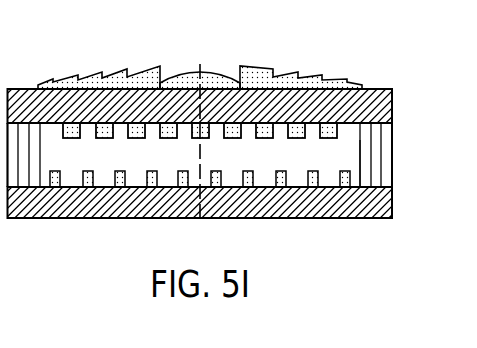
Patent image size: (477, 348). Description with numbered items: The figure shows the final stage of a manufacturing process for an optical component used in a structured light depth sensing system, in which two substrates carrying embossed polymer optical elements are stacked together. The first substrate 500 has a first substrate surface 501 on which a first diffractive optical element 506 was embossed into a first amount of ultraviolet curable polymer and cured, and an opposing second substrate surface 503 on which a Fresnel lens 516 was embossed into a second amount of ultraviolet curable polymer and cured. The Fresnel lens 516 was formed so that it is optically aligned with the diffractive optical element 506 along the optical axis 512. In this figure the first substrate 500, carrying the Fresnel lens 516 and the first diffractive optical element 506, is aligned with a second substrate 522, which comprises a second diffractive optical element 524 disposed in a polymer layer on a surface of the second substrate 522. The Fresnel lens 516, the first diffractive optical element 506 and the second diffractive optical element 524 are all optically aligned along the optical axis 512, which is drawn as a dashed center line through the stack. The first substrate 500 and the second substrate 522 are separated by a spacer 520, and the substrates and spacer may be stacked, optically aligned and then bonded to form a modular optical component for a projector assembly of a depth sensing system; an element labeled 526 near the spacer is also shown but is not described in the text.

The substrate 500 is at (378, 89).
The first substrate surface 501 is at (388, 124).
The second substrate surface 503 is at (28, 89).
The diffractive optical element 506 is at (137, 140).
The optical axis 512 is at (200, 66).
The Fresnel lens 516 is at (138, 72).
The spacer 520 is at (392, 160).
The second substrate 522 is at (392, 212).
The second diffractive optical element 524 is at (247, 171).
The seal 526 is at (360, 187).